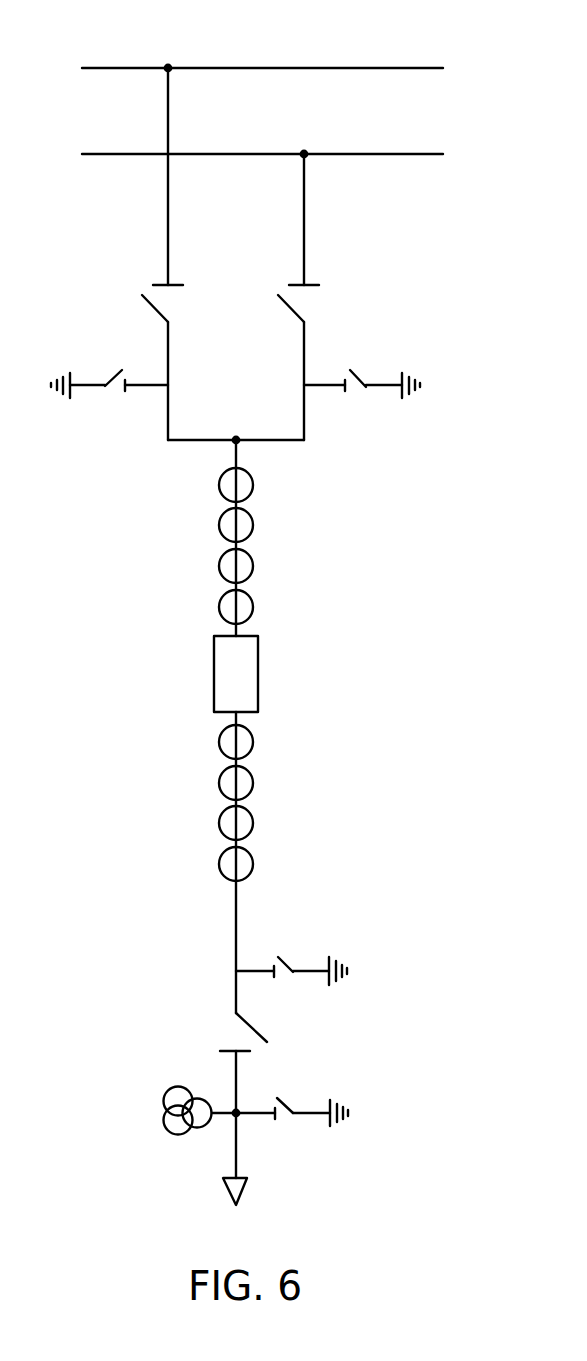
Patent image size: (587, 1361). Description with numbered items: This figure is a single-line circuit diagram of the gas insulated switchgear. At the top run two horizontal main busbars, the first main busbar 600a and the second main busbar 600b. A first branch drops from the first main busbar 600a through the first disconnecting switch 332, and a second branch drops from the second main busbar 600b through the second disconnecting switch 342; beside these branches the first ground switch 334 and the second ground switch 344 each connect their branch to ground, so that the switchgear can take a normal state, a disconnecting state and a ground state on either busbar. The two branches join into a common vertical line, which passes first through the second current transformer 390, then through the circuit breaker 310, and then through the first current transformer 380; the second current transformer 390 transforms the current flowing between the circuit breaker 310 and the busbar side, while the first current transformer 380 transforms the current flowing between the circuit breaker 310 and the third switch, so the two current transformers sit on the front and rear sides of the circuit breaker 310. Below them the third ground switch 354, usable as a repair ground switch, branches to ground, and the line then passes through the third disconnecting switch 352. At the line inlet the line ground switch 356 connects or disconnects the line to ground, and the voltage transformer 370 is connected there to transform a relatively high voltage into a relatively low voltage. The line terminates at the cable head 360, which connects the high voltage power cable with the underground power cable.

The first main busbar 600a is at (323, 68).
The second main busbar 600b is at (372, 154).
The first disconnecting switch 332 is at (150, 292).
The second disconnecting switch 342 is at (300, 296).
The first ground switch 334 is at (118, 396).
The second ground switch 344 is at (355, 396).
The second current transformer 390 is at (220, 527).
The circuit breaker 310 is at (214, 672).
The first current transformer 380 is at (220, 826).
The third ground switch 354 is at (283, 957).
The third disconnecting switch 352 is at (270, 1047).
The line ground switch 356 is at (308, 1090).
The voltage transformer 370 is at (164, 1101).
The cable head 360 is at (243, 1189).